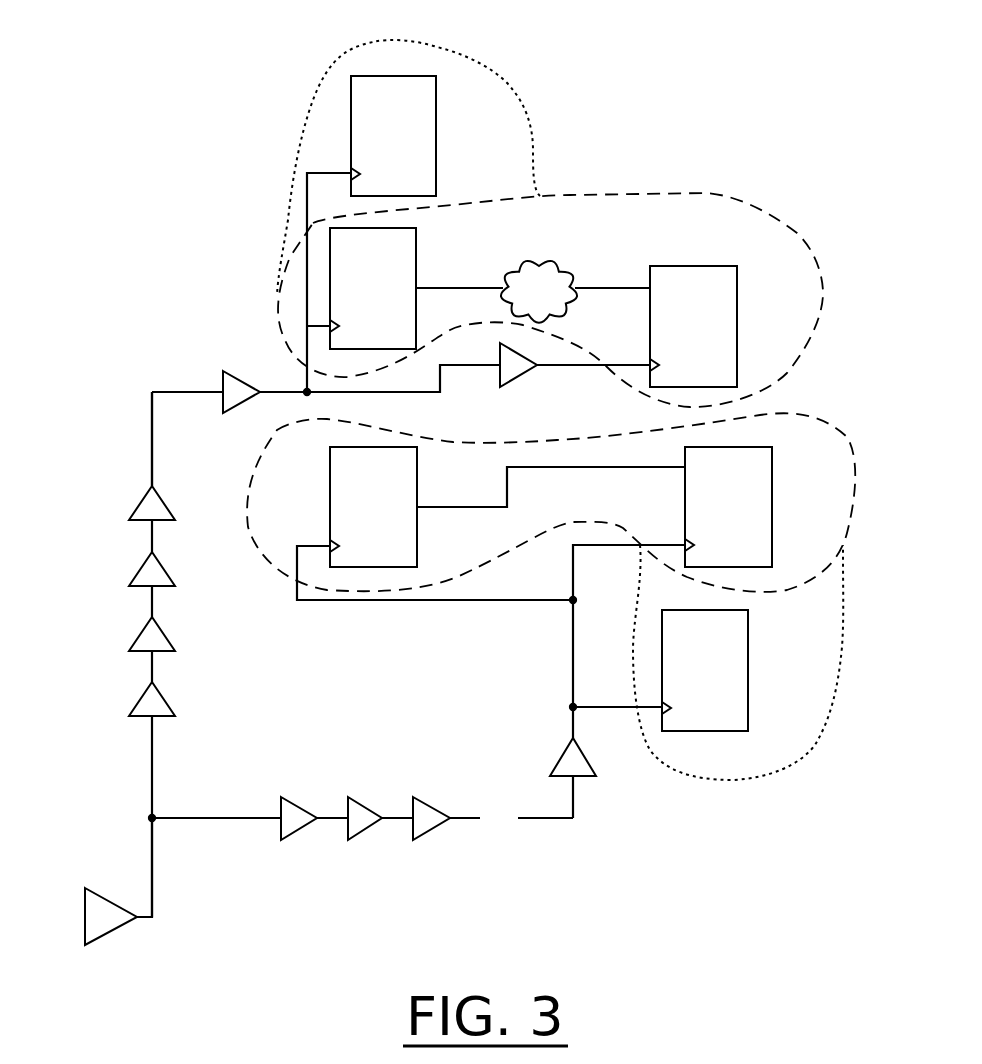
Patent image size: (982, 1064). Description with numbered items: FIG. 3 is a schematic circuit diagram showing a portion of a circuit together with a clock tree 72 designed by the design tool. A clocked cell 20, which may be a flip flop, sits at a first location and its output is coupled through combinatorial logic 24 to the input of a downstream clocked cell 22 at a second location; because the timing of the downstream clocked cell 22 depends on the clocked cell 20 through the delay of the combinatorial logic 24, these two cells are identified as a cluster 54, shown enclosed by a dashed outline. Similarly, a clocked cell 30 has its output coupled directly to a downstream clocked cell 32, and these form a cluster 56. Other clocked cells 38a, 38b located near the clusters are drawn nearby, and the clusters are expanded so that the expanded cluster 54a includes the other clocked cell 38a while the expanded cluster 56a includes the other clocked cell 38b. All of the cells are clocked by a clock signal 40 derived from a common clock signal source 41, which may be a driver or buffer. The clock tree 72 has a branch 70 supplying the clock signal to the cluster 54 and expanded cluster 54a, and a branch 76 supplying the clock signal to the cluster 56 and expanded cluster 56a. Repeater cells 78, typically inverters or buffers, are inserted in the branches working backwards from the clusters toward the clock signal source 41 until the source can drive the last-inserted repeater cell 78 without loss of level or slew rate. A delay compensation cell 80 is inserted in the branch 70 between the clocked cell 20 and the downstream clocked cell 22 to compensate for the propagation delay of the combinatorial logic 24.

The clocked cell 20 is at (416, 260).
The downstream clocked cell 22 is at (737, 286).
The combinatorial logic 24 is at (557, 272).
The clocked cell 30 is at (330, 490).
The downstream clocked cell 32 is at (772, 467).
The other clocked cell 38a is at (436, 113).
The other clocked cell 38b is at (748, 632).
The clock signal 40 is at (152, 868).
The clock signal source 41 is at (85, 907).
The cluster 54 is at (712, 195).
The expanded cluster 54a is at (443, 51).
The cluster 56 is at (797, 417).
The expanded cluster 56a is at (780, 772).
The branch 70 is at (150, 392).
The clock tree 72 is at (148, 668).
The branch 76 is at (575, 820).
The repeater cell 78 is at (117, 635).
The delay compensation cell 80 is at (527, 374).